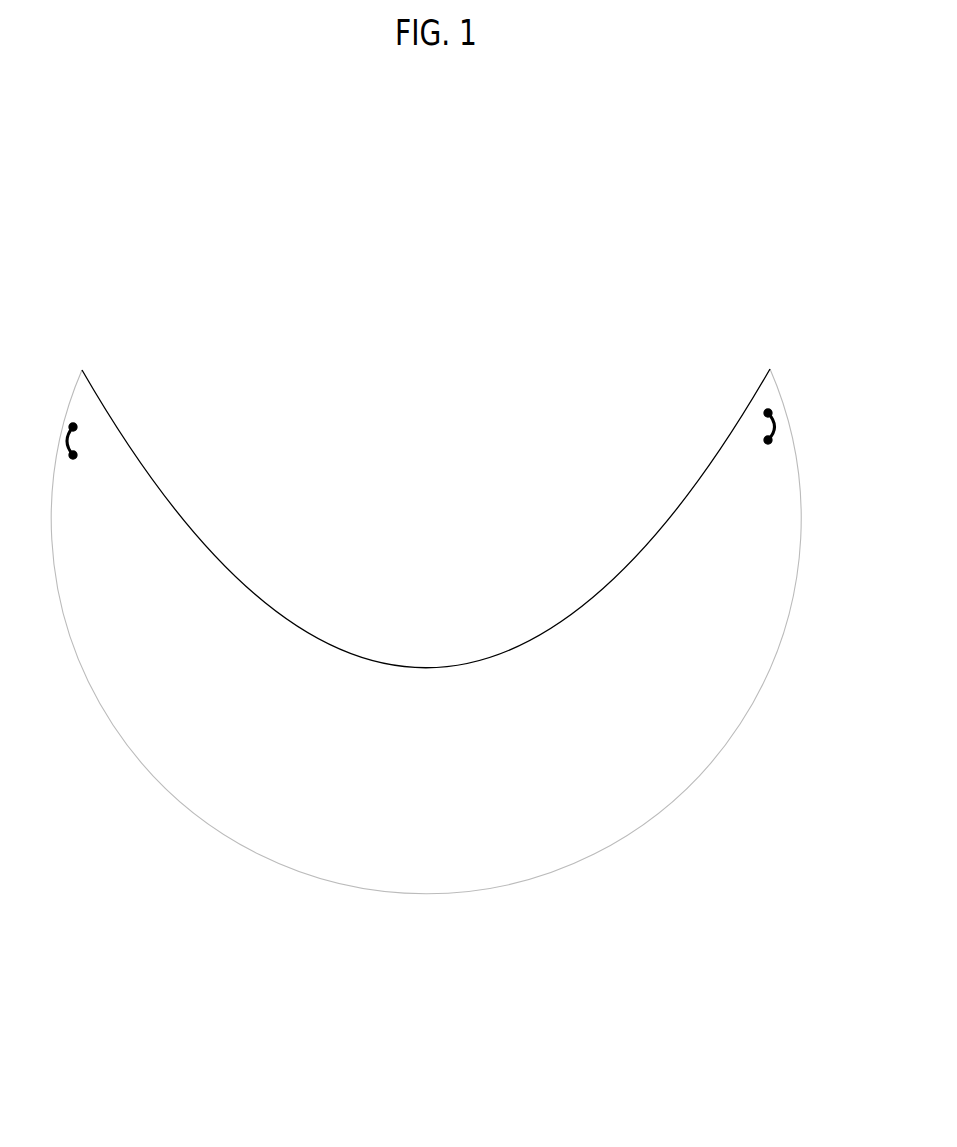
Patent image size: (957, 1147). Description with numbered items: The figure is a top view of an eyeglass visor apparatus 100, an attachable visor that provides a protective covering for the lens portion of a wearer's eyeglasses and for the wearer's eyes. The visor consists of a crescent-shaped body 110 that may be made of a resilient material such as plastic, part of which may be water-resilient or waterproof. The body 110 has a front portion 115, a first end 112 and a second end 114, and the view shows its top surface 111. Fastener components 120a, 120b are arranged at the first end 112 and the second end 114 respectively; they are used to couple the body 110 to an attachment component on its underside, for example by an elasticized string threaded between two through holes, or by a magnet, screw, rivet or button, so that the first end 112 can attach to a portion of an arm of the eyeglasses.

The eyeglass visor apparatus 100 is at (495, 335).
The body 110 is at (500, 895).
The top surface 111 is at (260, 649).
The first end 112 is at (90, 371).
The second end 114 is at (773, 369).
The front portion 115 is at (425, 859).
The fastener component 120a is at (85, 428).
The fastener component 120b is at (783, 425).